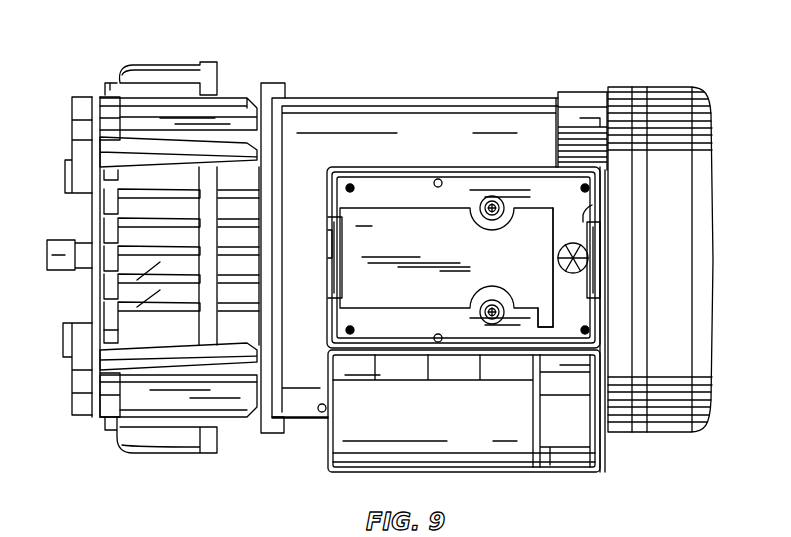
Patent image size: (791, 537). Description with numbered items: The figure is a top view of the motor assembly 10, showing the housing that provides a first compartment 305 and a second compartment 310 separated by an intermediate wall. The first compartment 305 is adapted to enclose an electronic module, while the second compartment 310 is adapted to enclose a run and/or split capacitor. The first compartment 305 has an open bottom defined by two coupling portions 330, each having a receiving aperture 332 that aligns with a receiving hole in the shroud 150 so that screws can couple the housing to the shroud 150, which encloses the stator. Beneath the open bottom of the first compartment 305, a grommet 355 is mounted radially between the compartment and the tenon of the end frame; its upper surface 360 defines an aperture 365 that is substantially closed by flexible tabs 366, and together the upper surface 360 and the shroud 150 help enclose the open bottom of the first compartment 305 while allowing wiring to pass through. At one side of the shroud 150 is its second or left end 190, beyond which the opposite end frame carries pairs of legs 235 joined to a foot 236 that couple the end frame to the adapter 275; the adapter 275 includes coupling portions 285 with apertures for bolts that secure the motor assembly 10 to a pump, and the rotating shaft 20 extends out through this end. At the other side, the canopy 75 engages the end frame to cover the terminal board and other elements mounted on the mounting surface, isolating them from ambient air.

The motor assembly 10 is at (645, 48).
The rotating shaft 20 is at (63, 242).
The canopy 75 is at (712, 312).
The shroud 150 is at (323, 95).
The second or left end 190 is at (264, 83).
The legs 235 is at (207, 112).
The foot 236 is at (100, 108).
The adapter 275 is at (158, 60).
The coupling portions 285 is at (73, 134).
The first compartment 305 is at (402, 225).
The second compartment 310 is at (358, 428).
The coupling portions 330 is at (456, 190).
The receiving apertures 332 is at (491, 198).
The grommet 355 is at (551, 224).
The upper surface 360 is at (590, 206).
The aperture 365 is at (551, 272).
The flexible tabs 366 is at (582, 255).